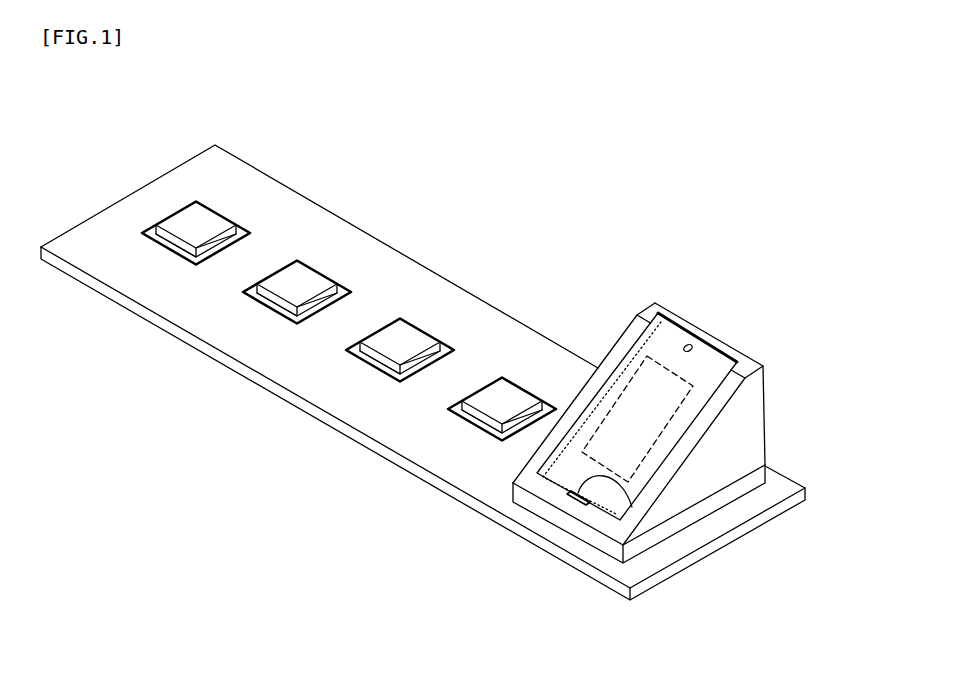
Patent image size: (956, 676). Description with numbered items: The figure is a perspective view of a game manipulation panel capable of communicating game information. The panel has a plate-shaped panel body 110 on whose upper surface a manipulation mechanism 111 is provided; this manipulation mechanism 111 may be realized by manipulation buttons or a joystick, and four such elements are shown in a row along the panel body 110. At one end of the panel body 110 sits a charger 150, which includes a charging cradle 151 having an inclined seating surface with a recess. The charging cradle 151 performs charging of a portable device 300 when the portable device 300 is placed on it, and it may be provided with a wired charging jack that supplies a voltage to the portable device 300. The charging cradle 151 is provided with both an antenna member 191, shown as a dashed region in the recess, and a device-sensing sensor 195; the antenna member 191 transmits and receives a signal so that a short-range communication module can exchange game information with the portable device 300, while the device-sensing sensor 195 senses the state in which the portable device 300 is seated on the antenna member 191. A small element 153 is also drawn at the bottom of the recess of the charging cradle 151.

The panel body 110 is at (410, 240).
The manipulation mechanism 111 is at (298, 280).
The charger 150 is at (685, 444).
The charging cradle 151 is at (707, 478).
The terminal pad 153 is at (612, 481).
The antenna member 191 is at (665, 368).
The device-sensing sensor 195 is at (690, 347).
The portable device 300 is at (715, 380).